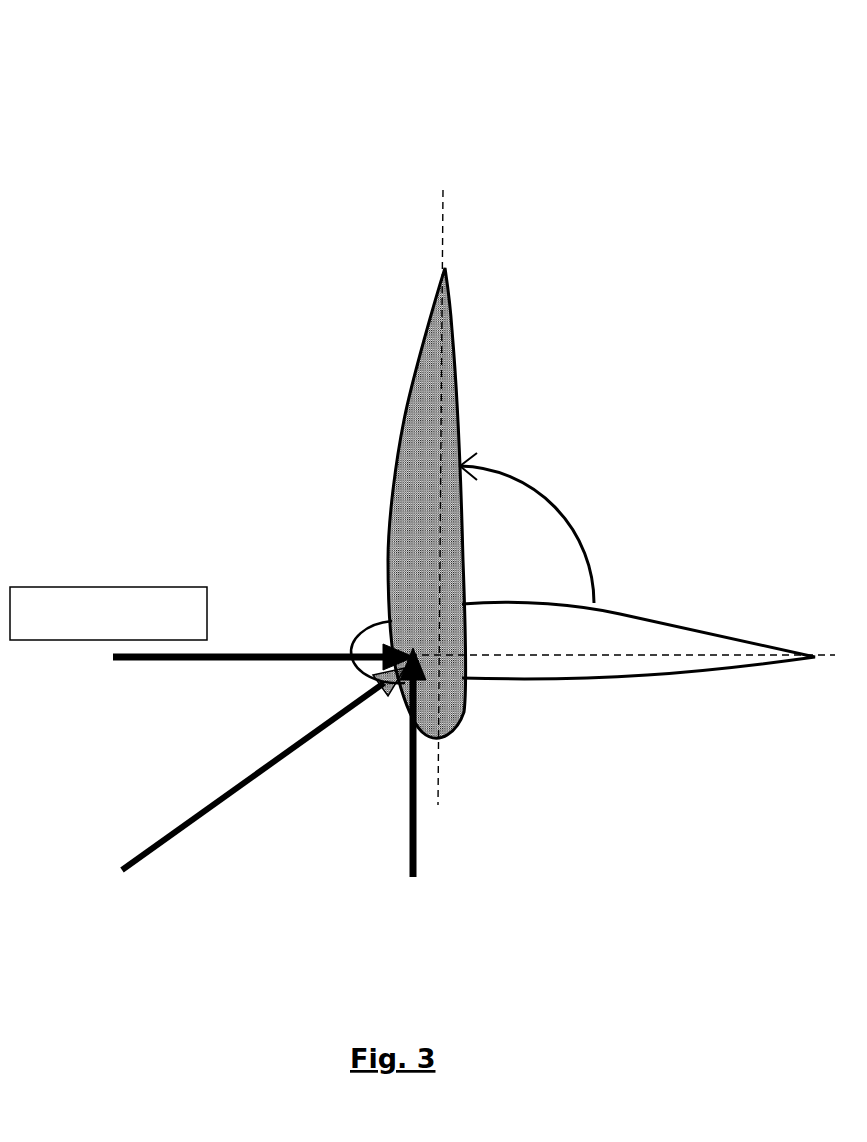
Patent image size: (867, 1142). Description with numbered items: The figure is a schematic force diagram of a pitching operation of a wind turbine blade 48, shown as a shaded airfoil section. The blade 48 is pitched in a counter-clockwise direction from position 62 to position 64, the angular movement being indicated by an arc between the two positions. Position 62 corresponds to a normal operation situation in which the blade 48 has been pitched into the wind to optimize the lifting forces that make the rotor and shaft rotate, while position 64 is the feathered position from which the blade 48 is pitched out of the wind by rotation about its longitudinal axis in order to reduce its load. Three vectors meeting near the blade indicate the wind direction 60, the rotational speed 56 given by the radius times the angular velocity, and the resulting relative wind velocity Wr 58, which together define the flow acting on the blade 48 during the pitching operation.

The wind turbine blade 48 is at (420, 350).
The rotational speed 56 is at (240, 613).
The relative wind velocity Wr 58 is at (238, 790).
The wind direction 60 is at (405, 788).
The normal operation position 62 is at (835, 652).
The feathered position 64 is at (448, 230).